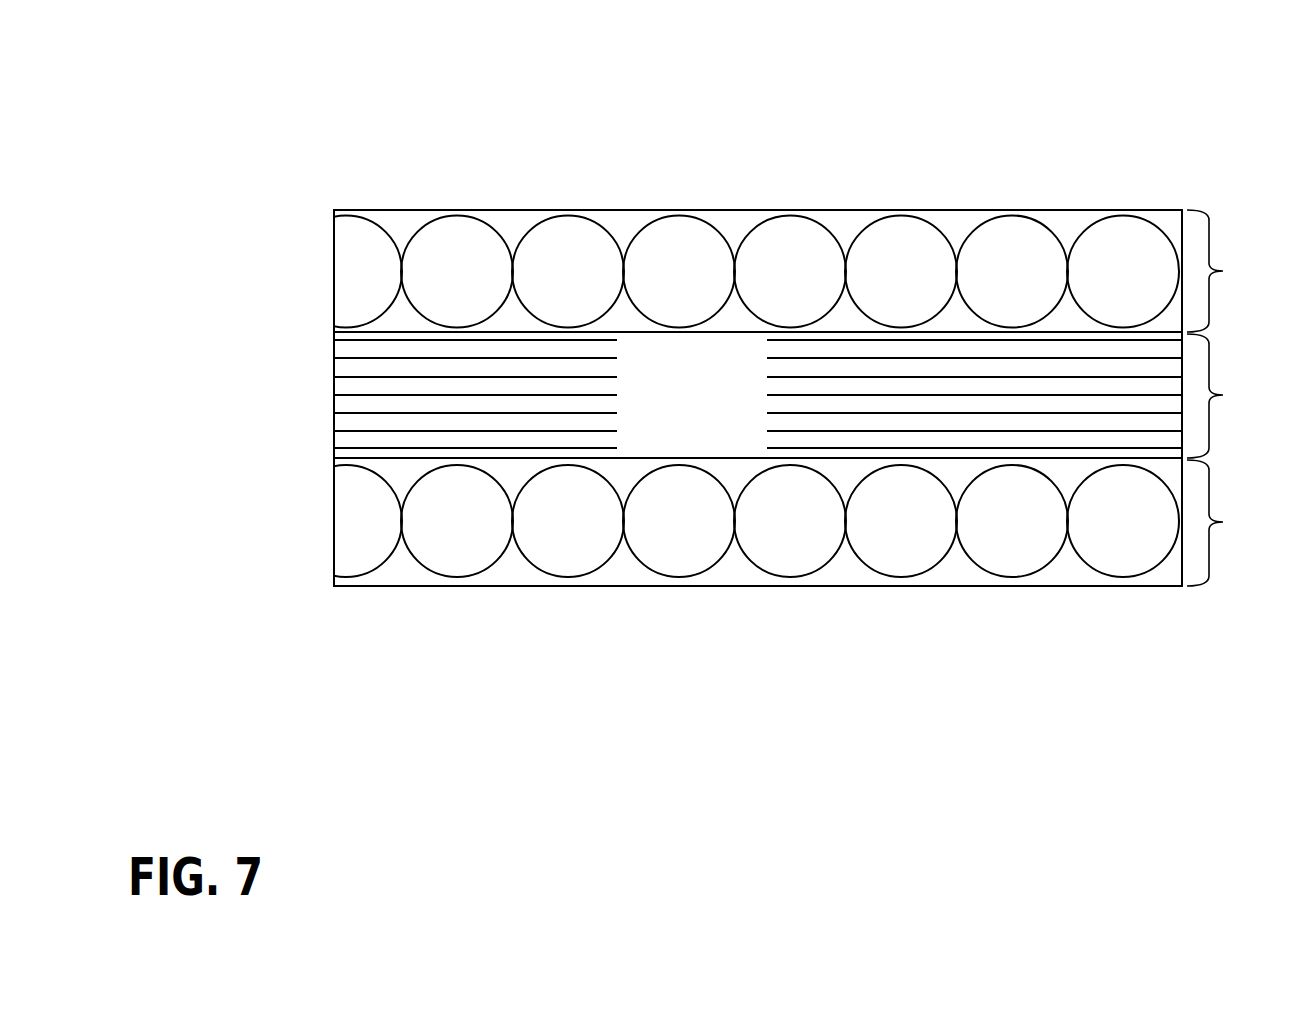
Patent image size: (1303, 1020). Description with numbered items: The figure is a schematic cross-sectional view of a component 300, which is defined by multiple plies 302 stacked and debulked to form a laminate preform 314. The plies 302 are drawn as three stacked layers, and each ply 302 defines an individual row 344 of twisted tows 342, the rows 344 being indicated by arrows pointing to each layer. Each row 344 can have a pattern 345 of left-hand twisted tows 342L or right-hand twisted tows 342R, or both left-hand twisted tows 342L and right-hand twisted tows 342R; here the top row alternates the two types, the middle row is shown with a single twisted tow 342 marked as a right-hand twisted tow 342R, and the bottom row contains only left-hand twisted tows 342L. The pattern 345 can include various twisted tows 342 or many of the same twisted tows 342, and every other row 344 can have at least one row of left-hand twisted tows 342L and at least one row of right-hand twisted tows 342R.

The component 300 is at (445, 97).
The ply 302 is at (803, 398).
The laminate preform 314 is at (773, 210).
The twisted tow 342 is at (543, 217).
The pattern 345 is at (1017, 230).
The row 344 is at (323, 282).
The right-hand twisted tow 342R is at (668, 397).
The left-hand twisted tow 342L is at (789, 562).